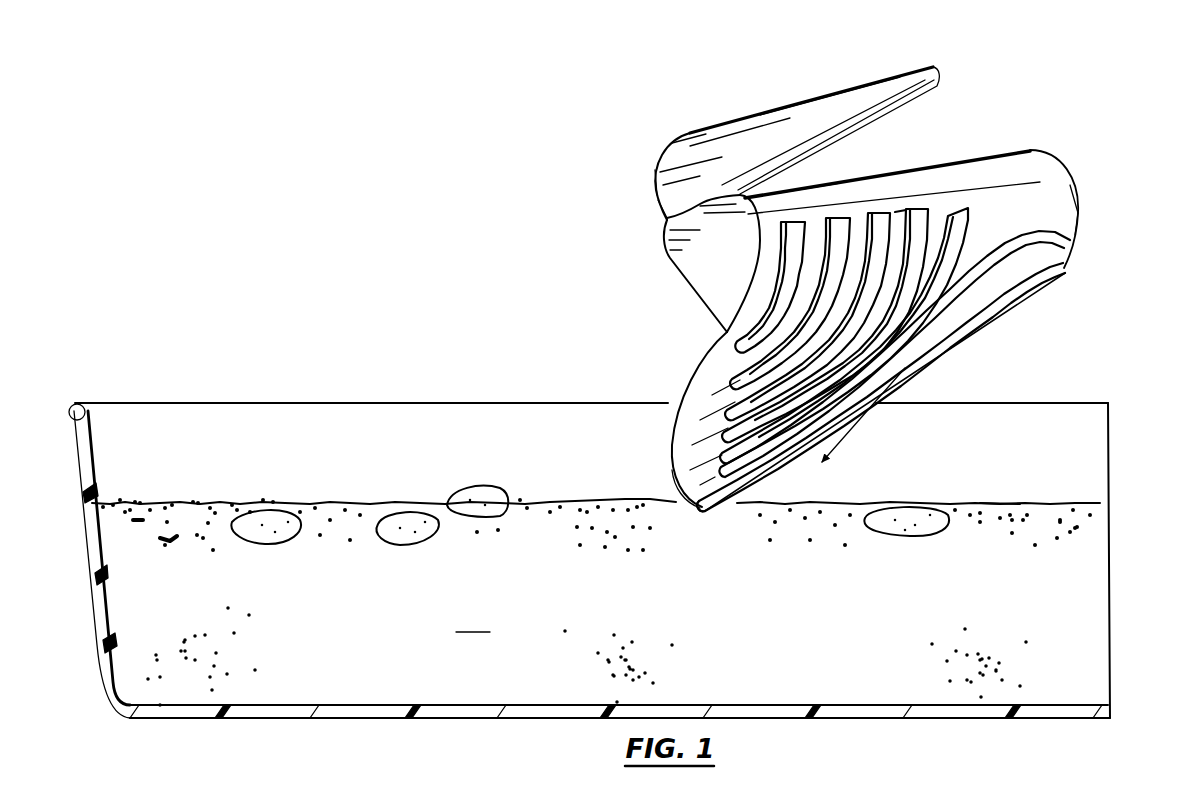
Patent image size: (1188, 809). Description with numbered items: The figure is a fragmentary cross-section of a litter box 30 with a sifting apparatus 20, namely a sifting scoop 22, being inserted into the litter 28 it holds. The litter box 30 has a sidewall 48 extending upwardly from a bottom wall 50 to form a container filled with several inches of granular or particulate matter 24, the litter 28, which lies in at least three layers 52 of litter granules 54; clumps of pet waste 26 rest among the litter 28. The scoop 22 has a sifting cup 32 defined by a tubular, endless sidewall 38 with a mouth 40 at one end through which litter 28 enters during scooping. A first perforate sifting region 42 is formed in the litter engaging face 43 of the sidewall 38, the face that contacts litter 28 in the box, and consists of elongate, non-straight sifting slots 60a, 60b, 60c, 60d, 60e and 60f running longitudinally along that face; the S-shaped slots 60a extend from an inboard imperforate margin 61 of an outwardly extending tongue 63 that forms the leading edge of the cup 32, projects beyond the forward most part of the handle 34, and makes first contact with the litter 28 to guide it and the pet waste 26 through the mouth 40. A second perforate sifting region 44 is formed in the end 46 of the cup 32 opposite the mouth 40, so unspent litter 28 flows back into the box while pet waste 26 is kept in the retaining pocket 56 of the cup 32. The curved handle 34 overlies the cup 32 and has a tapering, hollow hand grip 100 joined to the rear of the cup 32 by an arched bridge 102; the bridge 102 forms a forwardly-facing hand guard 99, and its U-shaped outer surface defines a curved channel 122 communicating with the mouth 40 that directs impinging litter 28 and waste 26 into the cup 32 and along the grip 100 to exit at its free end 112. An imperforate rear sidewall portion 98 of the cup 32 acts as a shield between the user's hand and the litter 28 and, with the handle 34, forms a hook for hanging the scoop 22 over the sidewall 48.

The sifting apparatus 20 is at (637, 175).
The sifting scoop 22 is at (850, 300).
The granular or particulate matter 24 is at (133, 473).
The pet waste 26 is at (283, 507).
The litter 28 is at (1000, 500).
The litter box 30 is at (252, 400).
The sifting cup 32 is at (1003, 149).
The handle 34 is at (859, 105).
The sidewall 38 is at (1048, 188).
The mouth 40 is at (672, 283).
The first perforate sifting region 42 is at (965, 345).
The litter engaging face 43 is at (710, 520).
The second perforate sifting region 44 is at (1080, 195).
The end of the cup 46 is at (1097, 213).
The sidewall of the litter box 48 is at (451, 403).
The bottom wall 50 is at (240, 718).
The layers of litter 52 is at (1072, 497).
The litter granules 54 is at (640, 660).
The retaining pocket 56 is at (660, 420).
The sifting slots 60a is at (1052, 272).
The sifting slot 60b is at (965, 224).
The sifting slot 60c is at (917, 212).
The sifting slot 60d is at (727, 412).
The sifting slot 60e is at (732, 380).
The sifting slot 60f is at (738, 340).
The inboard imperforate margin 61 is at (724, 435).
The tongue 63 is at (698, 512).
The imperforate rear sidewall portion 98 is at (832, 192).
The hand guard 99 is at (640, 190).
The hand grip 100 is at (762, 104).
The bridge 102 is at (690, 205).
The free end 112 is at (948, 72).
The channel 122 is at (652, 209).